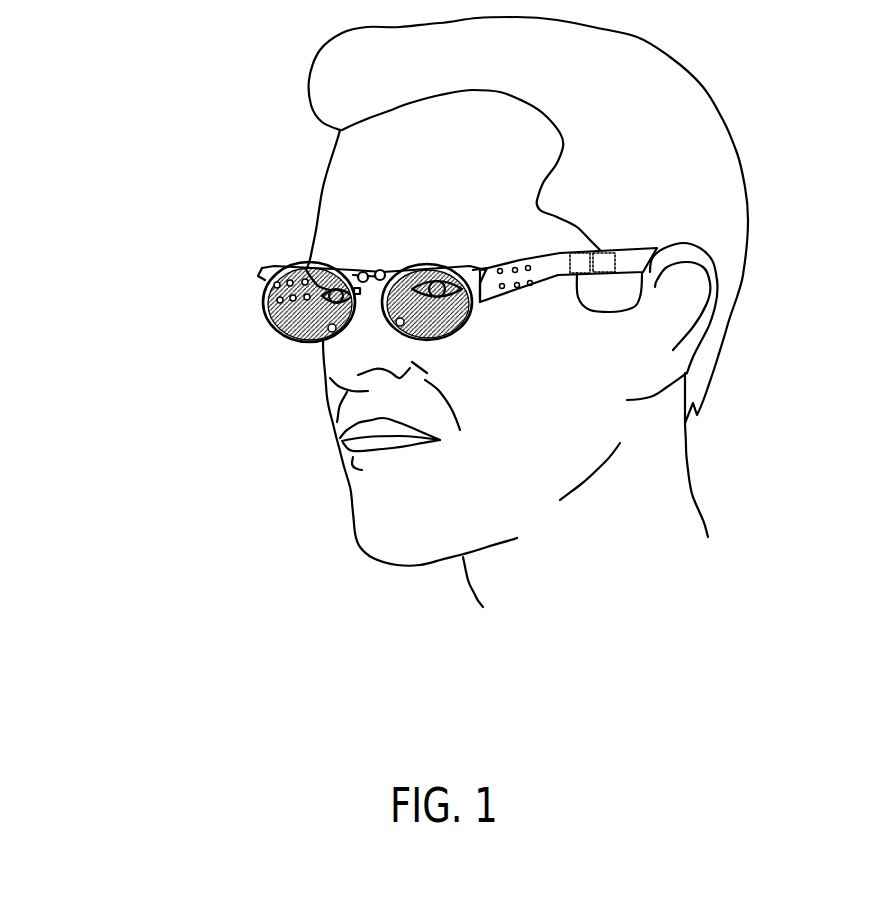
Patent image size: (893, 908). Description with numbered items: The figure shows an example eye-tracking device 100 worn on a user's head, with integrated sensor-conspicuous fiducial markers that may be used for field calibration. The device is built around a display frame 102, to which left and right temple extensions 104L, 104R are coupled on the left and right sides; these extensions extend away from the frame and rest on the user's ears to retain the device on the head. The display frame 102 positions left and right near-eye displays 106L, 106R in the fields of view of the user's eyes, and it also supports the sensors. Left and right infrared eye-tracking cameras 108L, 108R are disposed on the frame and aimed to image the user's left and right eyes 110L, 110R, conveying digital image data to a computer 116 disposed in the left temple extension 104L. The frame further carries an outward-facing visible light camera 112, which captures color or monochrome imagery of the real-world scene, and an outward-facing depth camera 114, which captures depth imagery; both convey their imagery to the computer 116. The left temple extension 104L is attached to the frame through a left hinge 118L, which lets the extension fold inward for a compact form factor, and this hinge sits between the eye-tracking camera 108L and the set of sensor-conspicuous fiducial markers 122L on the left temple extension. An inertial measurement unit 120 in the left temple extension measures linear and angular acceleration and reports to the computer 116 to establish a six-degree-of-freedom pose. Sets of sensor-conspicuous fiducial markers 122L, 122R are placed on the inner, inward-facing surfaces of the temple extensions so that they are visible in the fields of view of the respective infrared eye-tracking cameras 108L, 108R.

The eye-tracking device 100 is at (174, 253).
The display frame 102 is at (466, 262).
The right temple extension 104R is at (277, 277).
The left temple extension 104L is at (543, 283).
The right near-eye display 106R is at (297, 320).
The left near-eye display 106L is at (430, 285).
The right infrared eye-tracking camera 108R is at (330, 332).
The left infrared eye-tracking camera 108L is at (404, 326).
The right eye 110R is at (340, 292).
The left eye 110L is at (433, 288).
The outward-facing visible light camera 112 is at (362, 272).
The outward-facing depth camera 114 is at (379, 270).
The computer 116 is at (580, 253).
The left hinge 118L is at (317, 294).
The inertial measurement unit 120 is at (605, 253).
The set of sensor-conspicuous fiducial markers 122R is at (272, 293).
The set of sensor-conspicuous fiducial markers 122L is at (517, 297).